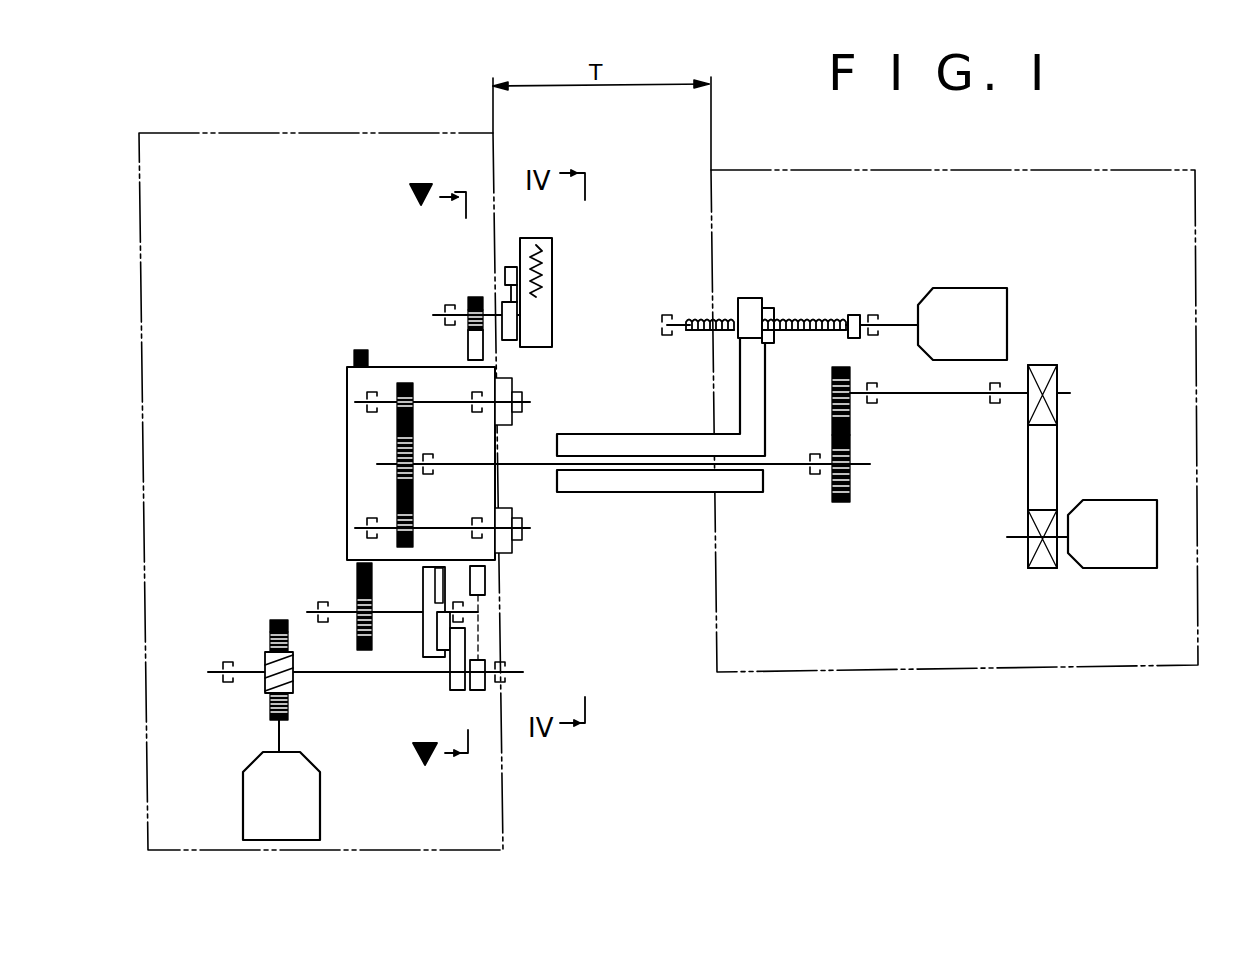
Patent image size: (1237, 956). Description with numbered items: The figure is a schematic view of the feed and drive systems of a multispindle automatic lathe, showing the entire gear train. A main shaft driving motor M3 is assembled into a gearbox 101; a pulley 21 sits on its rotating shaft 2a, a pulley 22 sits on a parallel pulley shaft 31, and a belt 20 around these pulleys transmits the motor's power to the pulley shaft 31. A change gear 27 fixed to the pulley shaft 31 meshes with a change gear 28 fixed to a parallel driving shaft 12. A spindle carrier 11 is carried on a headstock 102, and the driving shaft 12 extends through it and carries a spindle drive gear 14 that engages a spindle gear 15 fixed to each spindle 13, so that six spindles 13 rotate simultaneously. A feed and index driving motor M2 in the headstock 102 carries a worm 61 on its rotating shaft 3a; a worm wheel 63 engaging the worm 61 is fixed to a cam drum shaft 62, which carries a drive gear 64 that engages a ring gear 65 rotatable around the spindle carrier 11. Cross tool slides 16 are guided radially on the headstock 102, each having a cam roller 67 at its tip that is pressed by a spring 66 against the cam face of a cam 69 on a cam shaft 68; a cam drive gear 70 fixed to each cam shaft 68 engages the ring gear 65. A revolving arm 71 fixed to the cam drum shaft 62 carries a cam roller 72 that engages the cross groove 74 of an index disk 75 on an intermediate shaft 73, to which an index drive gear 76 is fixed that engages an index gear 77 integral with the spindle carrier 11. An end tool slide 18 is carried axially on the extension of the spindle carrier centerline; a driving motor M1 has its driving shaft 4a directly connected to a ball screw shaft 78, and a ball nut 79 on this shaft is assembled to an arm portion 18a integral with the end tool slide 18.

The gearbox 101 is at (947, 672).
The headstock 102 is at (503, 768).
The spindle carrier 11 is at (381, 366).
The driving shaft 12 is at (537, 465).
The spindle 13 is at (503, 423).
The spindle drive gear 14 is at (397, 450).
The spindle gear 15 is at (402, 382).
The cross tool slide 16 is at (552, 282).
The end tool slide 18 is at (745, 492).
The arm portion 18a is at (747, 388).
The belt 20 is at (1058, 456).
The pulley 21 is at (1028, 562).
The pulley 22 is at (1040, 367).
The change gear 27 is at (832, 378).
The change gear 28 is at (832, 492).
The pulley shaft 31 is at (930, 395).
The rotating shaft 2a is at (1063, 545).
The rotating shaft 3a is at (278, 733).
The driving shaft 4a is at (895, 322).
The worm 61 is at (268, 645).
The cam drum shaft 62 is at (345, 673).
The worm wheel 63 is at (270, 702).
The drive gear 64 is at (490, 680).
The ring gear 65 is at (486, 590).
The spring 66 is at (537, 245).
The cam roller 67 is at (507, 312).
The cam shaft 68 is at (478, 352).
The cam 69 is at (510, 340).
The cam drive gear 70 is at (468, 302).
The revolving arm 71 is at (452, 683).
The cam roller 72 is at (437, 648).
The intermediate shaft 73 is at (395, 611).
The cross groove 74 is at (465, 632).
The index disk 75 is at (423, 630).
The index drive gear 76 is at (358, 603).
The index gear 77 is at (357, 567).
The ball screw shaft 78 is at (803, 320).
The ball nut 79 is at (770, 342).
The driving motor M1 is at (990, 288).
The feed and index driving motor M2 is at (321, 818).
The main shaft driving motor M3 is at (1127, 570).